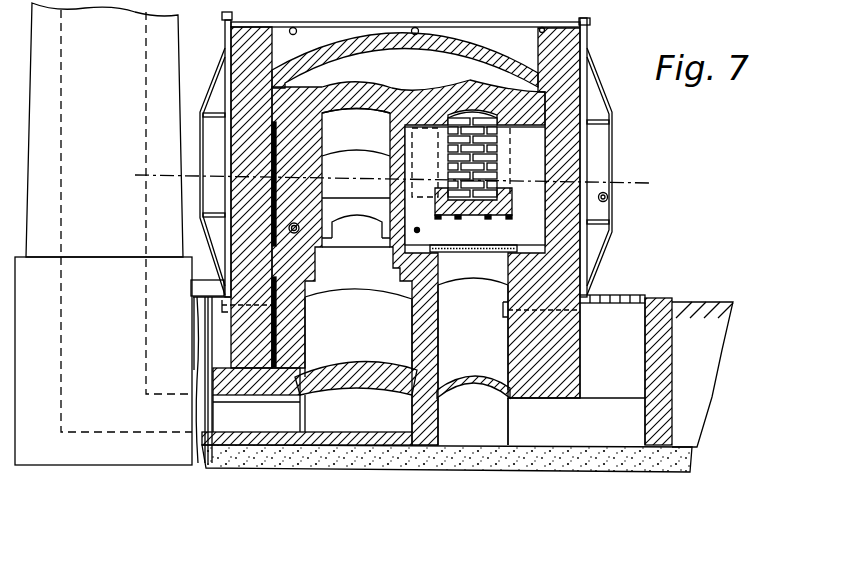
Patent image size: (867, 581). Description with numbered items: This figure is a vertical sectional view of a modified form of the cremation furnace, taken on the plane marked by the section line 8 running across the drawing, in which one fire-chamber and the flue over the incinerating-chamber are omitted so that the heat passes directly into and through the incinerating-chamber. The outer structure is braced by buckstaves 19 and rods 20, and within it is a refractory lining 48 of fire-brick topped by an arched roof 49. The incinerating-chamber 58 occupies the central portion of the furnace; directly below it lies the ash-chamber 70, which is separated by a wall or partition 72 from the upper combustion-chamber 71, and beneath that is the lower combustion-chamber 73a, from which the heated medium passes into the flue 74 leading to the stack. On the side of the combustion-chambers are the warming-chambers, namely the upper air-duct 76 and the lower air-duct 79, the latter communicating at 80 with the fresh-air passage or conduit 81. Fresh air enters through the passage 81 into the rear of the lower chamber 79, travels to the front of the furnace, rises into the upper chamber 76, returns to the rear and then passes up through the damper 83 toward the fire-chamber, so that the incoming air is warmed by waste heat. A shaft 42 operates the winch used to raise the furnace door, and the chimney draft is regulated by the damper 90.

The section line 8 8 is at (392, 179).
The buckstaves 19 is at (411, 154).
The rods 20 is at (405, 21).
The shaft 42 is at (608, 197).
The lining 48 is at (318, 221).
The arched roof 49 is at (496, 56).
The incinerating-chamber 58 is at (356, 154).
The ash-chamber 70 is at (356, 231).
The combustion-chamber 71 is at (358, 333).
The wall or partition 72 is at (371, 368).
The lower combustion-chamber 73a is at (358, 413).
The flue 74 is at (256, 413).
The warming-chamber or air-duct 76 is at (473, 341).
The lower air-duct 79 is at (473, 421).
The communication 80 is at (576, 421).
The fresh-air passage or conduit 81 is at (612, 346).
The damper 83 is at (473, 271).
The damper 90 is at (204, 341).